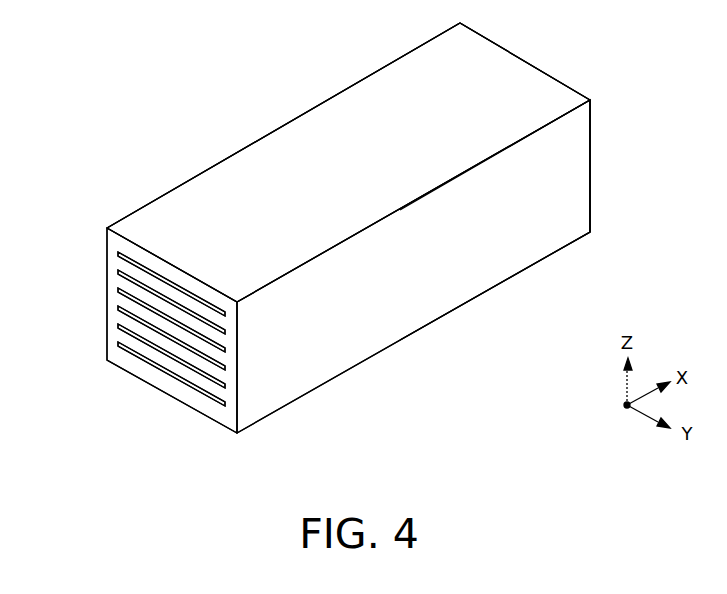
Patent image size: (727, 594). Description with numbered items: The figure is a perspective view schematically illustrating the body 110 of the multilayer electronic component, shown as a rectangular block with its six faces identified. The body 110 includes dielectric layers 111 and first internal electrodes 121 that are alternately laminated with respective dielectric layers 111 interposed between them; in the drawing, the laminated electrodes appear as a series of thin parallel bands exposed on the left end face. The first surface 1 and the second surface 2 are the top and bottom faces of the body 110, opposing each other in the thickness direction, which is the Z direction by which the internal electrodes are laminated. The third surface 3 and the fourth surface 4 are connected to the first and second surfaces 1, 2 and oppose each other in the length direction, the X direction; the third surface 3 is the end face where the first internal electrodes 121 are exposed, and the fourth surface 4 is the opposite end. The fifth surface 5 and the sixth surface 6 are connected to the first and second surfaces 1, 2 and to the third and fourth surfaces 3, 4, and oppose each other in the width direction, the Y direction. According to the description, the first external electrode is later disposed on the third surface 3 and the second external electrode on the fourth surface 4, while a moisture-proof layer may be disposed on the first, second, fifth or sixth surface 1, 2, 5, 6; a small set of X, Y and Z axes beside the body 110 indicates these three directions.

The first surface 1 is at (302, 149).
The body 110 is at (375, 95).
The second surface 2 is at (365, 327).
The fourth surface 4 is at (533, 103).
The fifth surface 5 is at (443, 280).
The sixth surface 6 is at (221, 192).
The dielectric layer 111 is at (133, 273).
The first internal electrode 121 is at (120, 254).
The third surface 3 is at (148, 348).